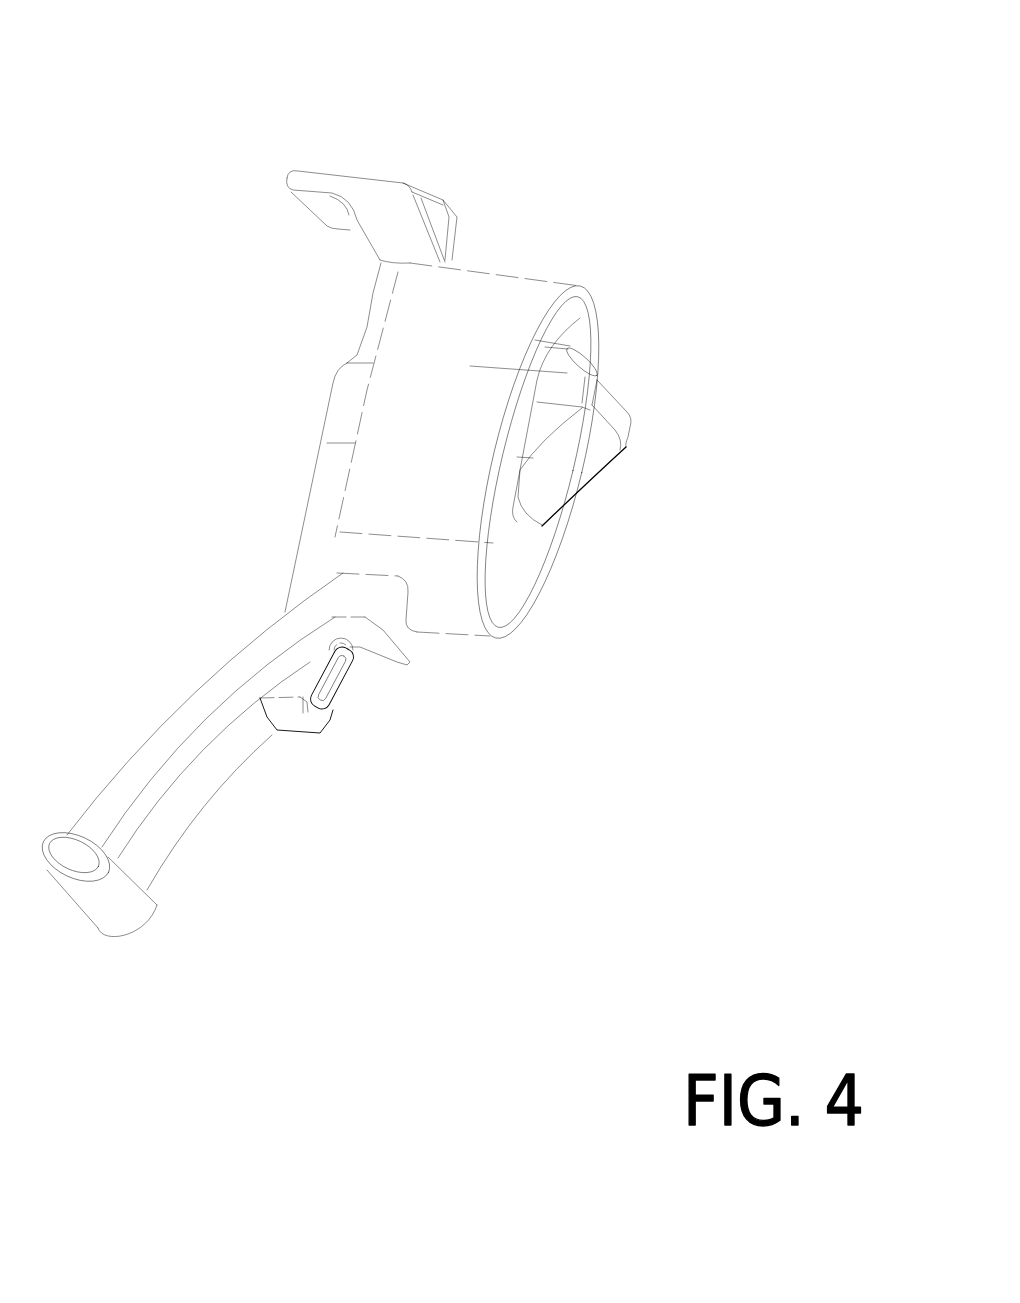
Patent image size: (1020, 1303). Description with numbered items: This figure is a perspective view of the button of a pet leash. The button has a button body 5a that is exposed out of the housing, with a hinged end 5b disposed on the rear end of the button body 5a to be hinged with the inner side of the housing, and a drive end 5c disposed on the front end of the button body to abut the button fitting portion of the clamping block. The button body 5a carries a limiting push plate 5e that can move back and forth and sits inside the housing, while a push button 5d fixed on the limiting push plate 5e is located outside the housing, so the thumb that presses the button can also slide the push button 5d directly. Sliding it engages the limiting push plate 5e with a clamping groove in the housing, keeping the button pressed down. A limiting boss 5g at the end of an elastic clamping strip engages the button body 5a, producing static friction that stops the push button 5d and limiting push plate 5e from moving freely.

The button body 5a is at (440, 566).
The hinged end 5b is at (120, 888).
The drive end 5c is at (316, 179).
The push button 5d is at (601, 455).
The limiting push plate 5e is at (363, 339).
The limiting boss 5g is at (357, 667).